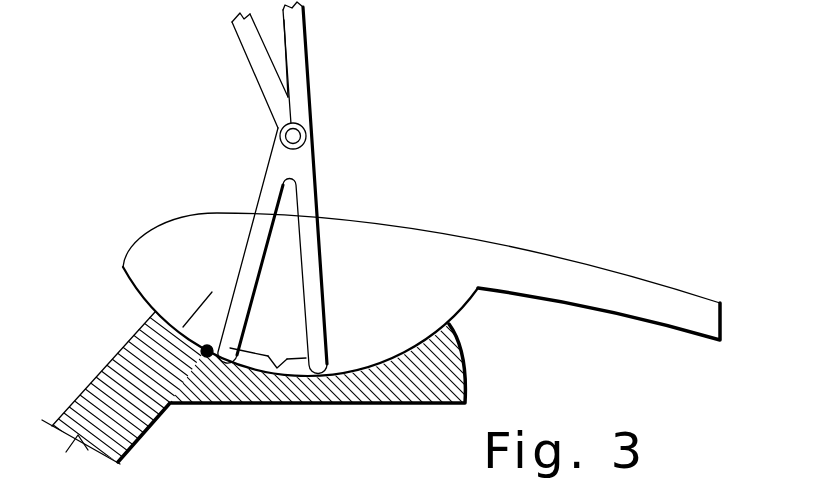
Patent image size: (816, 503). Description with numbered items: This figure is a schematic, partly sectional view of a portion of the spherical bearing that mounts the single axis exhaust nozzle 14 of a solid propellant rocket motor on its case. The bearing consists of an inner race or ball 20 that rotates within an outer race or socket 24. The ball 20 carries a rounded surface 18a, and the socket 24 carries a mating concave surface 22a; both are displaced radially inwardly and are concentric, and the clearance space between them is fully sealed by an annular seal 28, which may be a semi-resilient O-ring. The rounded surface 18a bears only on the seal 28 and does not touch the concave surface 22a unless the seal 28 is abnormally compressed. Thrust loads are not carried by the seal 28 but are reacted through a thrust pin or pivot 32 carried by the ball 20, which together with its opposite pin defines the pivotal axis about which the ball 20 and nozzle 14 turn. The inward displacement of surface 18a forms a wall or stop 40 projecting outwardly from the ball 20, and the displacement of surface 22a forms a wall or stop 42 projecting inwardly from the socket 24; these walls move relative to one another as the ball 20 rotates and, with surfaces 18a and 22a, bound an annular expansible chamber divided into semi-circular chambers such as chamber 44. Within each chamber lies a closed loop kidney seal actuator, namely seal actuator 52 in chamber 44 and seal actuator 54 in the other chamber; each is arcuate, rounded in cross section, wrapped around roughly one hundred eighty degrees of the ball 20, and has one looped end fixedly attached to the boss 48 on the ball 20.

The single axis exhaust nozzle 14 is at (657, 312).
The rounded surface 18a is at (274, 357).
The inner race or ball 20 is at (395, 248).
The concave surface 22a is at (212, 292).
The outer race or socket 24 is at (395, 387).
The annular seal 28 is at (203, 348).
The thrust pin or pivot 32 is at (281, 138).
The wall or stop 40 is at (311, 84).
The wall or stop 42 is at (243, 52).
The semi-circular chamber 44 is at (259, 368).
The boss 48 is at (266, 138).
The kidney seal actuator 52 is at (248, 270).
The kidney seal actuator 54 is at (297, 44).